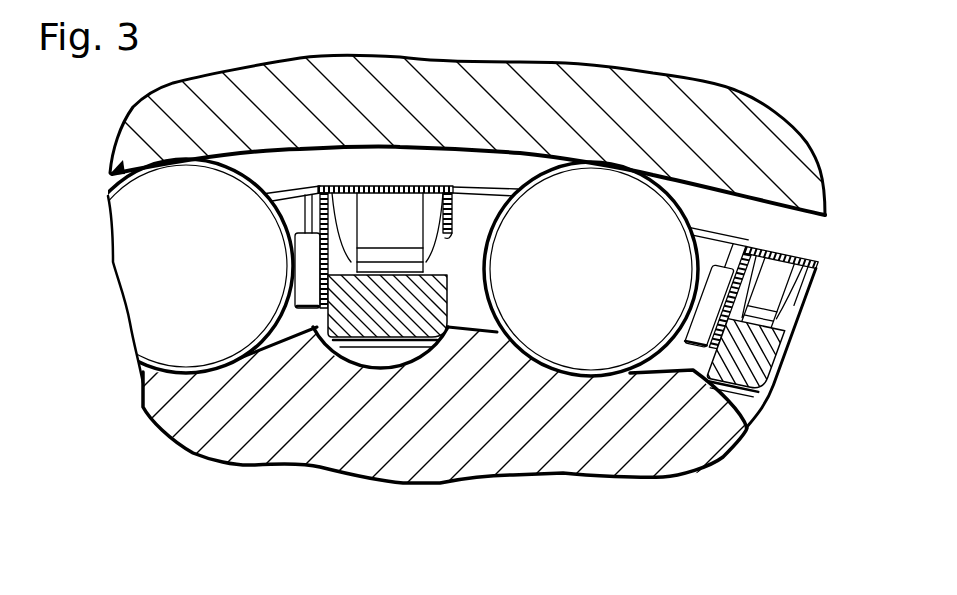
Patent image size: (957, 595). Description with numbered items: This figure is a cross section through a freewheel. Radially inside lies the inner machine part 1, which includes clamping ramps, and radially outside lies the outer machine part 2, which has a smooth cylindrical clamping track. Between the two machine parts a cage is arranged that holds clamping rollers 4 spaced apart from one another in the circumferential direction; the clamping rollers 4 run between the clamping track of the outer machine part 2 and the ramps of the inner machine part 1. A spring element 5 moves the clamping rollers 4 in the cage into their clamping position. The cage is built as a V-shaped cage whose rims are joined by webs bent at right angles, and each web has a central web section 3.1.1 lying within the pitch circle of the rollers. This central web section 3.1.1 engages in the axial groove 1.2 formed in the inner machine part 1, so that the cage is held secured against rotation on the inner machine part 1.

The inner machine part 1 is at (623, 457).
The axial groove 1.2 is at (395, 368).
The outer machine part 2 is at (707, 102).
The central web section 3.1.1 is at (367, 322).
The clamping roller 4 is at (145, 322).
The spring element 5 is at (779, 241).